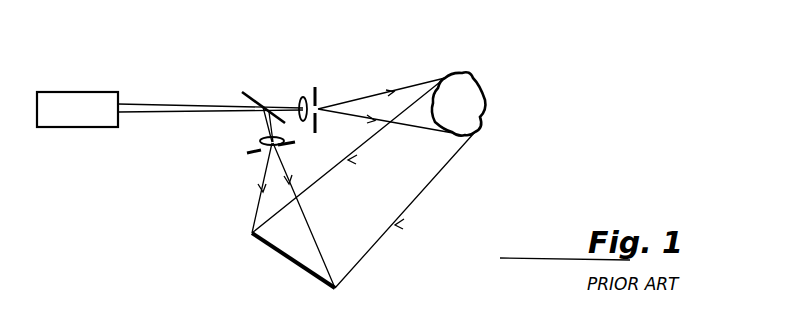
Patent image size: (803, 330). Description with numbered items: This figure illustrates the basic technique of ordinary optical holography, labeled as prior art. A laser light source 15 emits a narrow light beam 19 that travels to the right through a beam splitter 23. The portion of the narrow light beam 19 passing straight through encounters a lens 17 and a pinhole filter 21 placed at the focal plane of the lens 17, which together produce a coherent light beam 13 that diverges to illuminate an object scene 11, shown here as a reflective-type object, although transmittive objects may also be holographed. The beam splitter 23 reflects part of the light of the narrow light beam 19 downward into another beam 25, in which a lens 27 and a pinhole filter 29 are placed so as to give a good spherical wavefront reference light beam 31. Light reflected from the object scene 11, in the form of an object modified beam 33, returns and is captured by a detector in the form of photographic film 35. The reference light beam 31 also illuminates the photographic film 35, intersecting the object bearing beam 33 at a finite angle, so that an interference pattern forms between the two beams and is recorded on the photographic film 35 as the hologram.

The object scene 11 is at (463, 93).
The coherent light beam 13 is at (378, 98).
The laser light source 15 is at (93, 100).
The lens 17 is at (300, 100).
The narrow light beam 19 is at (173, 105).
The pinhole filter 21 is at (318, 90).
The beam splitter 23 is at (258, 97).
The another beam 25 is at (268, 118).
The lens 27 is at (262, 141).
The pinhole filter 29 is at (257, 153).
The reference light beam 31 is at (272, 205).
The object modified beam 33 is at (411, 181).
The photographic film 35 is at (278, 255).